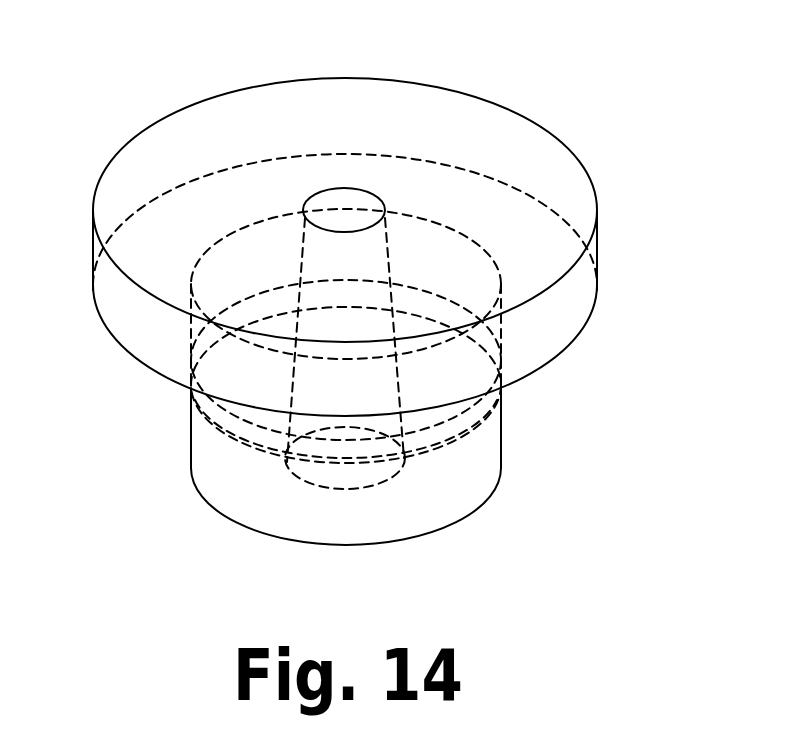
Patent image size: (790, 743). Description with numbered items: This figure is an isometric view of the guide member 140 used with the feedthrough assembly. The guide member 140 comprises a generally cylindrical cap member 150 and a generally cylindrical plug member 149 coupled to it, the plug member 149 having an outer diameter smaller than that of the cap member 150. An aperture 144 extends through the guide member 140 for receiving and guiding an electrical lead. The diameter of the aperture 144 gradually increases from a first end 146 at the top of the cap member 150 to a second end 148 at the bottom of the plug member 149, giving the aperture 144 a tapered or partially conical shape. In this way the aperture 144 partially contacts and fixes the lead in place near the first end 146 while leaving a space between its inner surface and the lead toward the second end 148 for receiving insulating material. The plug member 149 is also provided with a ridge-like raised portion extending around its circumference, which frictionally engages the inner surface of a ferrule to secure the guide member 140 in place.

The guide member 140 is at (373, 325).
The aperture 144 is at (352, 205).
The first end 146 is at (152, 176).
The second end 148 is at (352, 546).
The plug member 149 is at (472, 460).
The cap member 150 is at (575, 312).